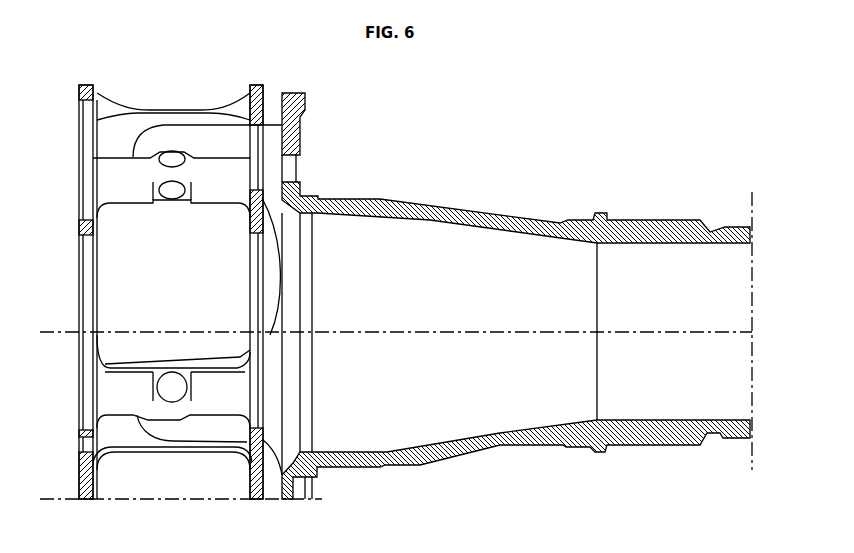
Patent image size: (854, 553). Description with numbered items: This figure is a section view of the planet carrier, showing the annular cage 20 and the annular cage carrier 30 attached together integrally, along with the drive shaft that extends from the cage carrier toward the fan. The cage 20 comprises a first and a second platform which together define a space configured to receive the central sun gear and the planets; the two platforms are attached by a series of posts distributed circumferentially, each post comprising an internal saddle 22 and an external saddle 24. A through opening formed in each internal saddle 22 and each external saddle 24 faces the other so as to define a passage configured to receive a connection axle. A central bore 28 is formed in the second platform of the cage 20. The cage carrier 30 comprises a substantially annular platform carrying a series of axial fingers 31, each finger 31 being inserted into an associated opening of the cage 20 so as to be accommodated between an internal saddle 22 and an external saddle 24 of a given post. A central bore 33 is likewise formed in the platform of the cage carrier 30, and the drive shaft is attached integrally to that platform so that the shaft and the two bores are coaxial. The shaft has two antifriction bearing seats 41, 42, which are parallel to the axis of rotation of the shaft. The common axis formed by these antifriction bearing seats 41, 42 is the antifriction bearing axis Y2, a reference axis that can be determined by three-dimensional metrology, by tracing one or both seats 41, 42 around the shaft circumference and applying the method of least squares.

The annular cage 20 is at (79, 233).
The internal saddle 22 is at (100, 173).
The external saddle 24 is at (138, 110).
The central bore 28 is at (258, 422).
The annular cage carrier 30 is at (292, 100).
The axial finger 31 is at (203, 133).
The central bore 33 is at (313, 226).
The antifriction bearing seat 41 is at (344, 195).
The antifriction bearing seat 42 is at (652, 219).
The antifriction bearing axis Y2 is at (646, 327).